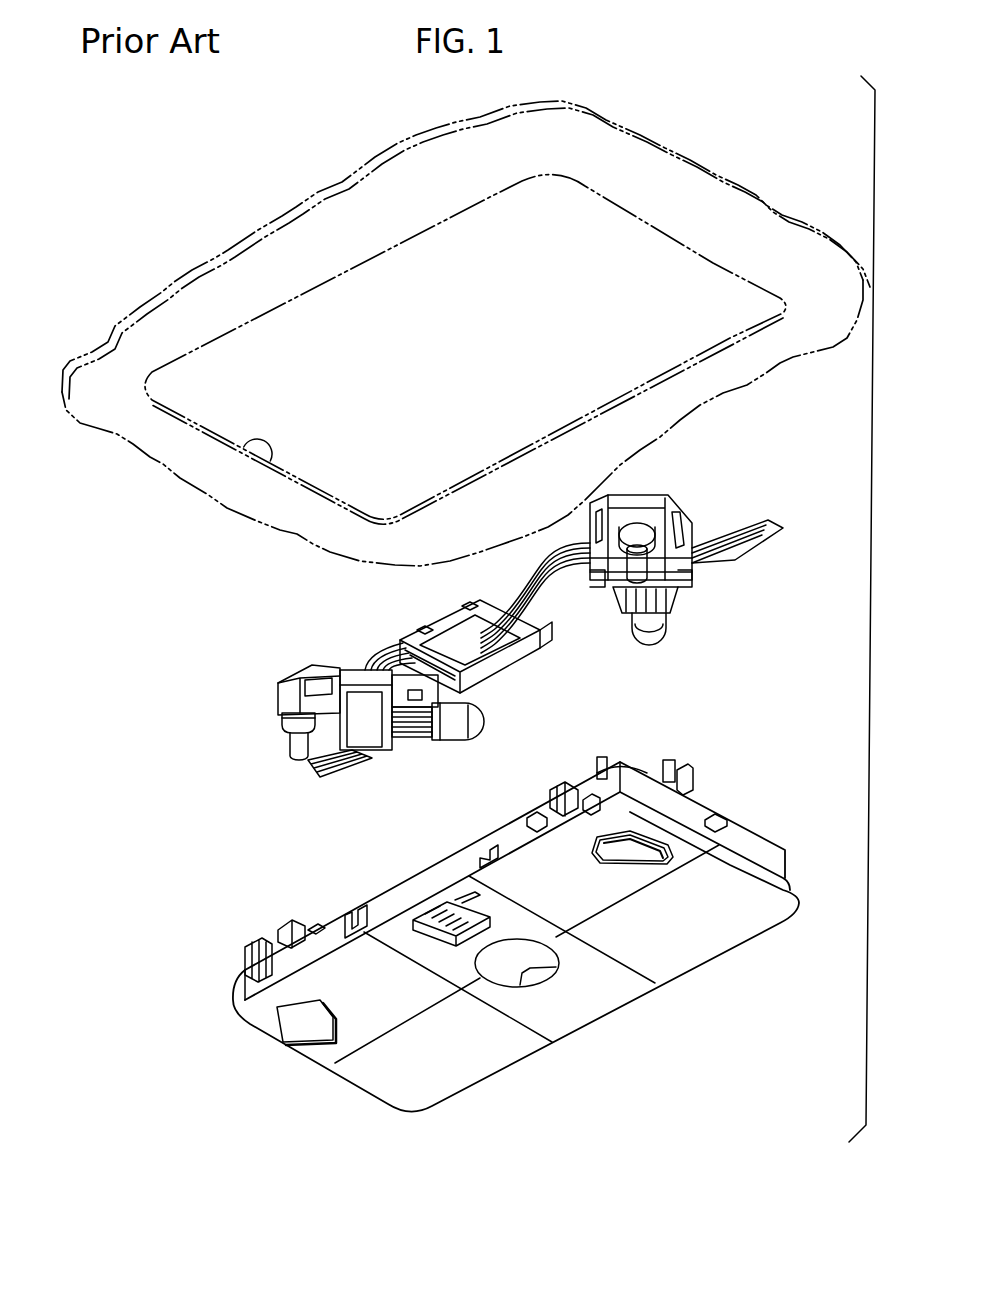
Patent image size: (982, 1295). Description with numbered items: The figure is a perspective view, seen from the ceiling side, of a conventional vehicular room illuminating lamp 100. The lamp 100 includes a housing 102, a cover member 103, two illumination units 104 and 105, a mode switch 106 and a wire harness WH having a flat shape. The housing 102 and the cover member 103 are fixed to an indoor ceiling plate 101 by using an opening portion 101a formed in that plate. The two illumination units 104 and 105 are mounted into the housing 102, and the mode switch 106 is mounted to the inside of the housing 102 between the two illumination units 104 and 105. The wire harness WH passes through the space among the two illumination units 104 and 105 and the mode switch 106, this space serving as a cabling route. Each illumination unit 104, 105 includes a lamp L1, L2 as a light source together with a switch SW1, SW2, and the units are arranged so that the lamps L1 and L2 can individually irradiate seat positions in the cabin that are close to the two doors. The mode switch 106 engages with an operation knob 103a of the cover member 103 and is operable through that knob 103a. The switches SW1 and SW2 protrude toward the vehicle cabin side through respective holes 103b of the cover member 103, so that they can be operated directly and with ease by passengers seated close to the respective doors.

The vehicular room illuminating lamp 100 is at (143, 616).
The indoor ceiling plate 101 is at (712, 187).
The opening portion 101a is at (268, 452).
The housing 102 is at (757, 828).
The cover member 103 is at (733, 938).
The operation knob 103a is at (430, 913).
The hole 103b is at (640, 847).
The illumination unit 104 is at (273, 677).
The illumination unit 105 is at (671, 490).
The mode switch 106 is at (473, 662).
The switch SW1 is at (287, 748).
The switch SW2 is at (650, 568).
The lamp L1 is at (460, 730).
The lamp L2 is at (668, 628).
The wire harness WH is at (740, 528).